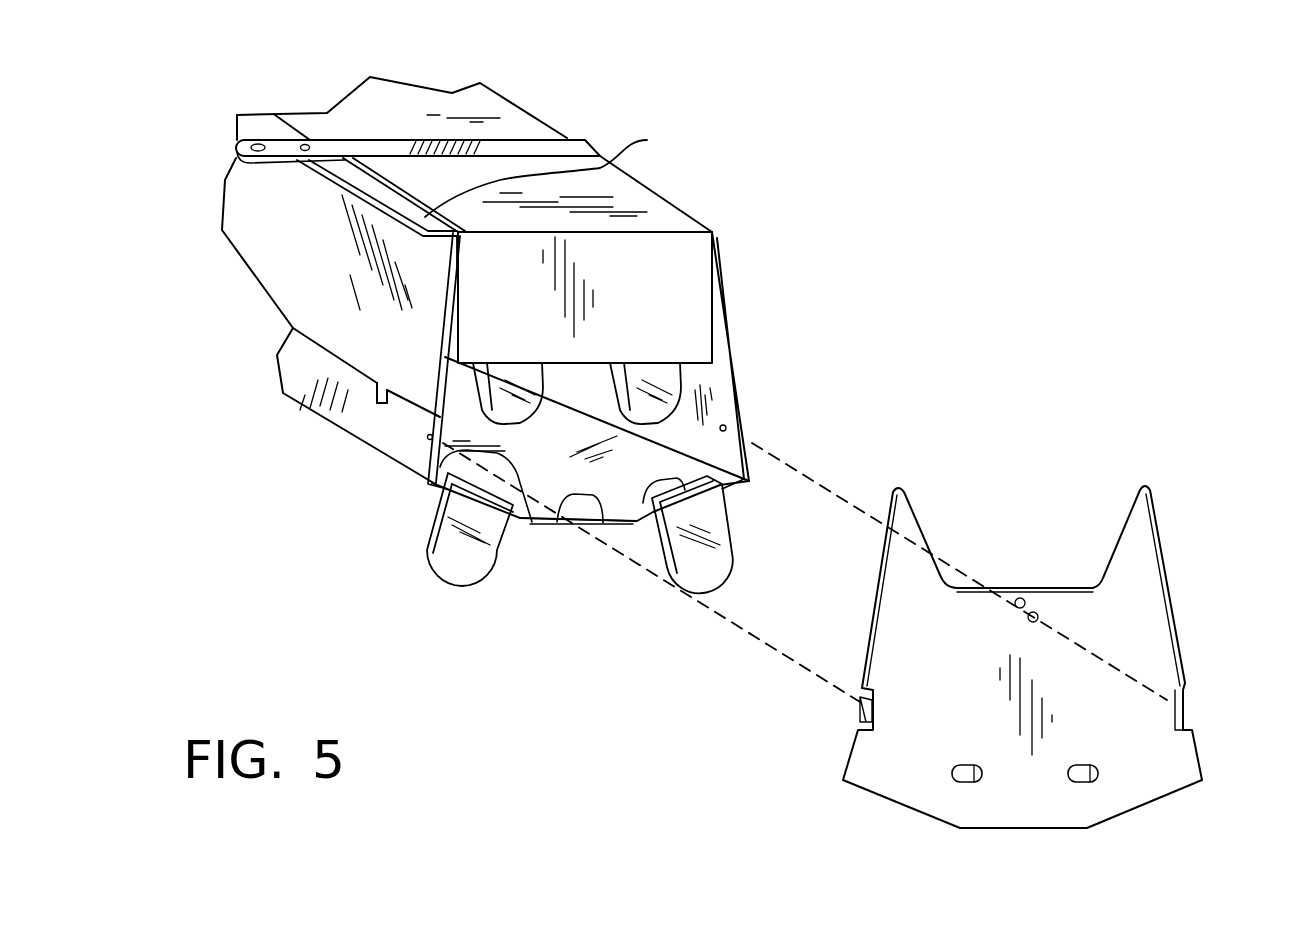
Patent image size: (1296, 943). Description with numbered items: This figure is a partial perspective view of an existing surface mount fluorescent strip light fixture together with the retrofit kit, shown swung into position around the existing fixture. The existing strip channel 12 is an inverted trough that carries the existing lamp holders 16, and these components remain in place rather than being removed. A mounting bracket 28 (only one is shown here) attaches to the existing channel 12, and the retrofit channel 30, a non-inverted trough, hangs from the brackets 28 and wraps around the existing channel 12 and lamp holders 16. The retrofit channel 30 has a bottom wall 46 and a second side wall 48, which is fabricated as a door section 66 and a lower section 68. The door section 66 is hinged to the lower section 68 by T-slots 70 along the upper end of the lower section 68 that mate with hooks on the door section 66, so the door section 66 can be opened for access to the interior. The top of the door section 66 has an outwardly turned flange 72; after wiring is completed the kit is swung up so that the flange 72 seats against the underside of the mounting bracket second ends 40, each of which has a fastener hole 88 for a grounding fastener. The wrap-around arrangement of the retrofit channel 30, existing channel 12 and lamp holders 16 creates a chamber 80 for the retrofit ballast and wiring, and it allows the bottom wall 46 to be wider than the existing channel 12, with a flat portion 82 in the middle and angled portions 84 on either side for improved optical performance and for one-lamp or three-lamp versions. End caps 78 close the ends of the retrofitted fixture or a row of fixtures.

The existing strip channel 12 is at (655, 220).
The lamp holders 16 is at (520, 382).
The mounting brackets 28 is at (513, 145).
The retrofit channel 30 is at (750, 390).
The mounting bracket second end 40 is at (250, 137).
The bottom wall 46 is at (559, 523).
The second side wall 48 is at (257, 320).
The door section 66 is at (303, 258).
The lower section 68 is at (316, 385).
The T-slots 70 is at (392, 418).
The outwardly turned flange 72 is at (549, 172).
The end caps 78 is at (1143, 572).
The chamber 80 is at (634, 443).
The flat portion 82 is at (603, 523).
The angled portions 84 is at (530, 522).
The fastener hole 88 is at (304, 143).